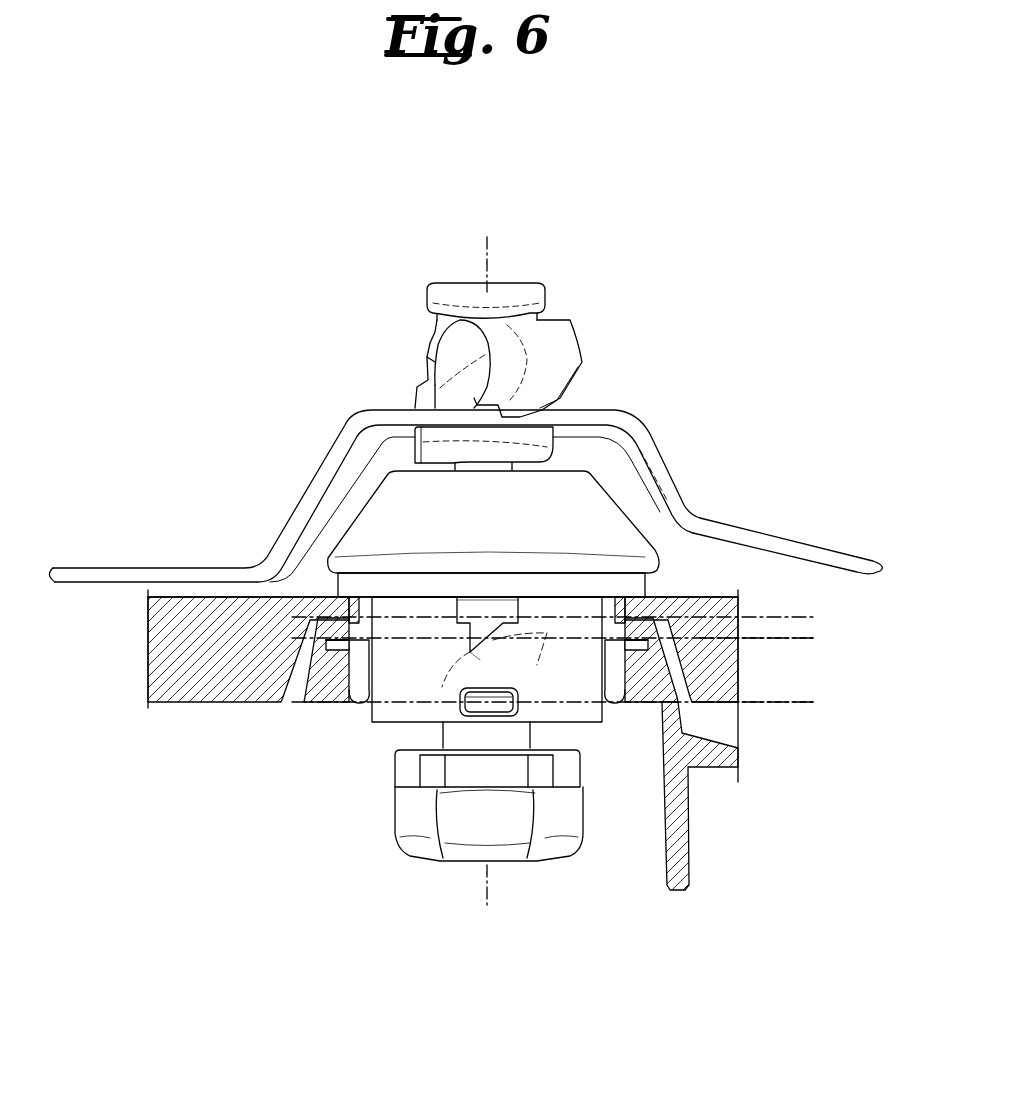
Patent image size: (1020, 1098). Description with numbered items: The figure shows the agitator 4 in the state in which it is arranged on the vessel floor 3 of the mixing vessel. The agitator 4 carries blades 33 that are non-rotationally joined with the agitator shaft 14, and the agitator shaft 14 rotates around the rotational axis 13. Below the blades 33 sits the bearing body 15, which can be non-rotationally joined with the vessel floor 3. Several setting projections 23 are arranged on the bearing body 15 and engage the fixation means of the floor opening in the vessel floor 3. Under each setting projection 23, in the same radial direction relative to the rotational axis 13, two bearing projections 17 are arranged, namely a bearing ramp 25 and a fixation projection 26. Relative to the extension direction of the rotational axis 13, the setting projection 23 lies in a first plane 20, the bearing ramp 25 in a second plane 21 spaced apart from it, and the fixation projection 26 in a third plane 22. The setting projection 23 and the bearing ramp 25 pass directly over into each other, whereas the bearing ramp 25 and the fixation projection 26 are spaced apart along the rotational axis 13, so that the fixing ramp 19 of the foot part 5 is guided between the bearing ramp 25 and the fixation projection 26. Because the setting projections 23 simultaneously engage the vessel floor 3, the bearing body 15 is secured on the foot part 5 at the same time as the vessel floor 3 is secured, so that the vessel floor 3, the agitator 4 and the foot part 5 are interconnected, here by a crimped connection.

The vessel floor 3 is at (190, 686).
The agitator 4 is at (352, 298).
The foot part 5 is at (313, 675).
The rotational axis 13 is at (485, 893).
The agitator shaft 14 is at (468, 735).
The bearing body 15 is at (407, 580).
The bearing projections 17 is at (445, 707).
The fixing ramp 19 is at (497, 662).
The first plane 20 is at (792, 615).
The second plane 21 is at (793, 638).
The third plane 22 is at (783, 702).
The setting projection 23 is at (495, 607).
The bearing ramp 25 is at (493, 640).
The fixation projection 26 is at (490, 698).
The blades 33 is at (178, 578).